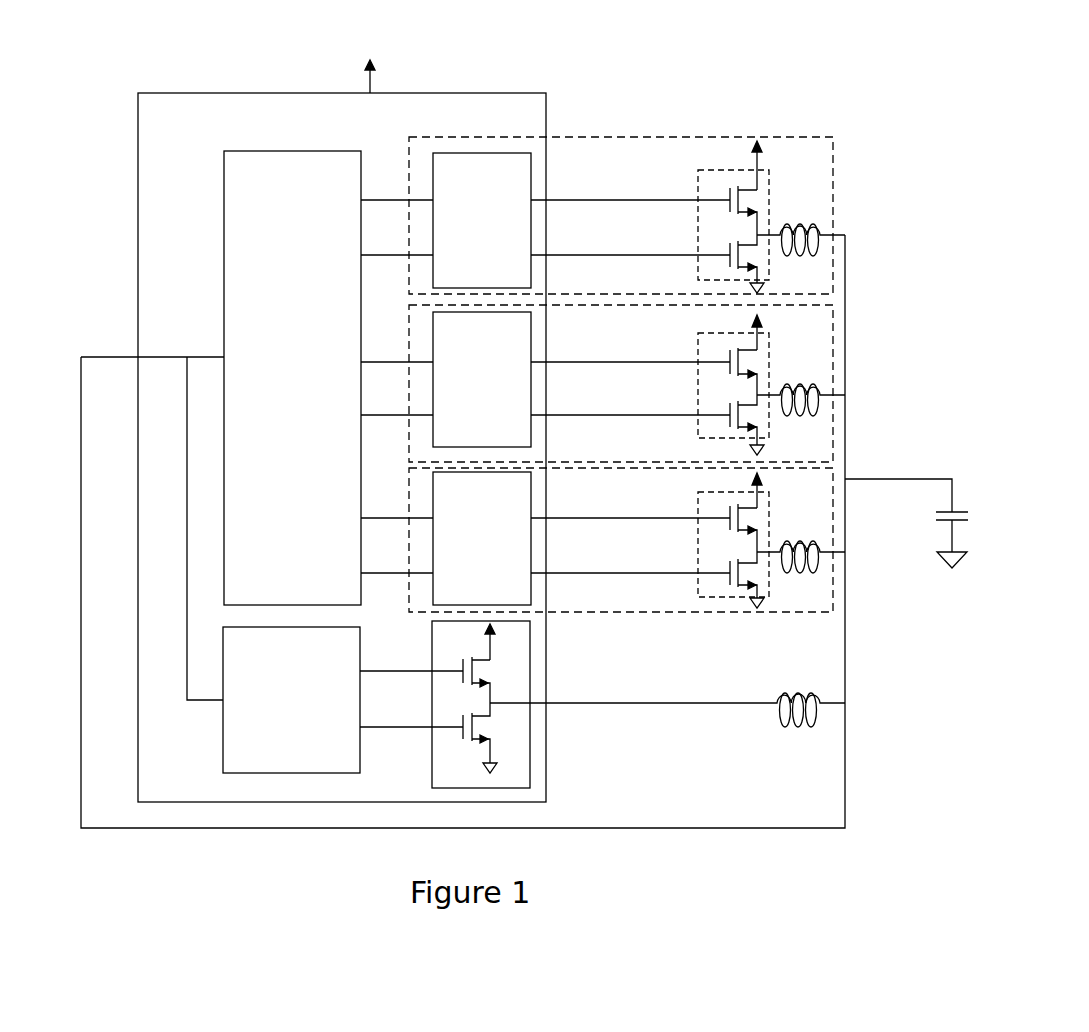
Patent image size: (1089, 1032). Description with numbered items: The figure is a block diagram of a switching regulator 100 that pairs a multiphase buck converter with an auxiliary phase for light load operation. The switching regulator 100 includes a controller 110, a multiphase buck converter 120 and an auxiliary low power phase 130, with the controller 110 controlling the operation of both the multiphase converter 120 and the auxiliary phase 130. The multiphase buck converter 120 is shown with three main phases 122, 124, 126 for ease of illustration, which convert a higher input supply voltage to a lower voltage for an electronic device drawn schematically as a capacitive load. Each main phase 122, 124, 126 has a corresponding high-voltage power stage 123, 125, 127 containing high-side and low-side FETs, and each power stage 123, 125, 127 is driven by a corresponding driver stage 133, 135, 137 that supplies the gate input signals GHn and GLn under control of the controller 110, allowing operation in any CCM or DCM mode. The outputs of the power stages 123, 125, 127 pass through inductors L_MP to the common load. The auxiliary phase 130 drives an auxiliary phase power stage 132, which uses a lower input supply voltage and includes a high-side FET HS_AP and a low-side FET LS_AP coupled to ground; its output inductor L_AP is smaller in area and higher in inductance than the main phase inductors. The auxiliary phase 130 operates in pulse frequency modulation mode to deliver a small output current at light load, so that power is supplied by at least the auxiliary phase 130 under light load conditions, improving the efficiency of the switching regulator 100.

The switching regulator 100 is at (927, 131).
The controller 110 is at (313, 419).
The multiphase buck converter 120 is at (292, 378).
The main phase 122 is at (833, 218).
The power stage 123 is at (697, 172).
The main phase 124 is at (833, 350).
The power stage 125 is at (697, 337).
The main phase 126 is at (833, 605).
The power stage 127 is at (697, 497).
The auxiliary low power phase 130 is at (291, 700).
The auxiliary phase power stage 132 is at (445, 704).
The first driver stage 133 is at (482, 220).
The second driver stage 135 is at (482, 379).
The third driver stage 137 is at (482, 538).